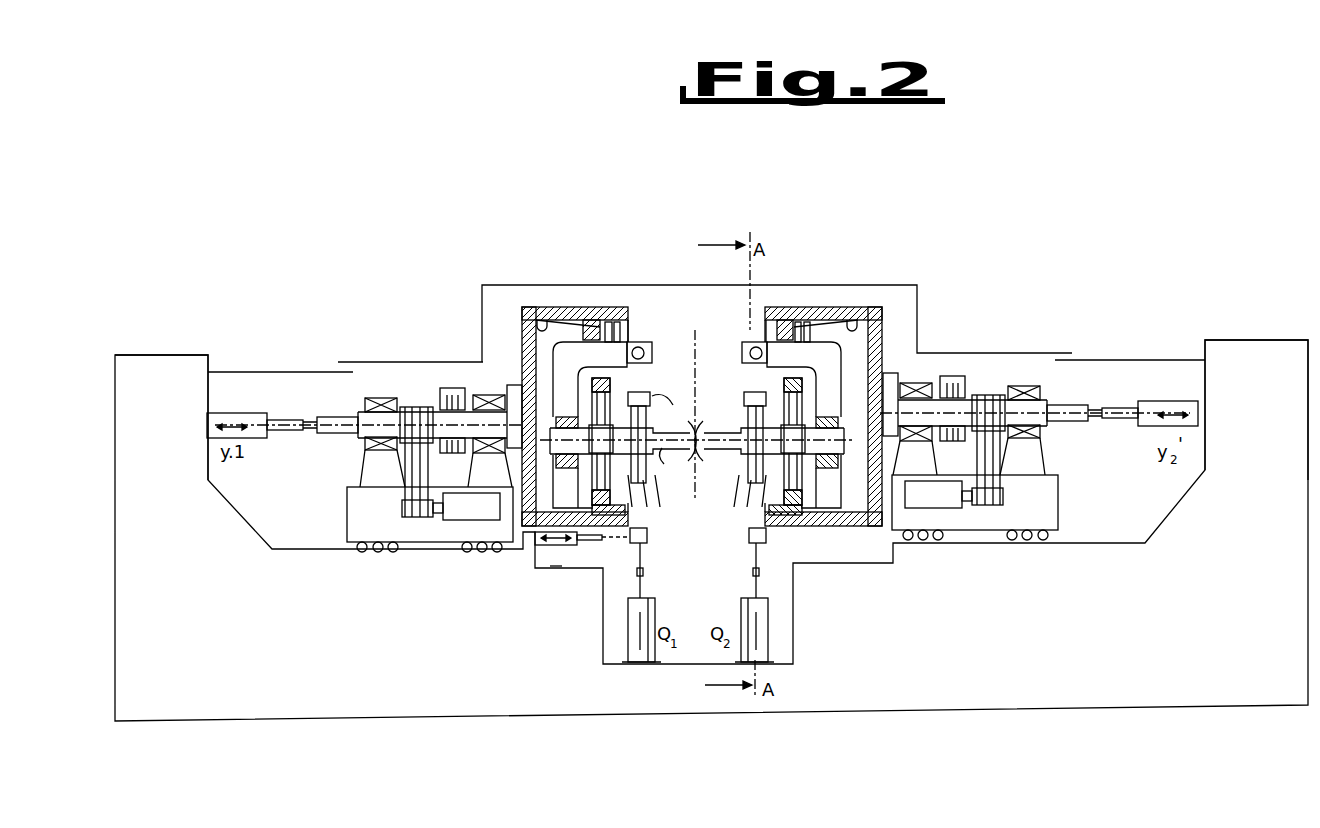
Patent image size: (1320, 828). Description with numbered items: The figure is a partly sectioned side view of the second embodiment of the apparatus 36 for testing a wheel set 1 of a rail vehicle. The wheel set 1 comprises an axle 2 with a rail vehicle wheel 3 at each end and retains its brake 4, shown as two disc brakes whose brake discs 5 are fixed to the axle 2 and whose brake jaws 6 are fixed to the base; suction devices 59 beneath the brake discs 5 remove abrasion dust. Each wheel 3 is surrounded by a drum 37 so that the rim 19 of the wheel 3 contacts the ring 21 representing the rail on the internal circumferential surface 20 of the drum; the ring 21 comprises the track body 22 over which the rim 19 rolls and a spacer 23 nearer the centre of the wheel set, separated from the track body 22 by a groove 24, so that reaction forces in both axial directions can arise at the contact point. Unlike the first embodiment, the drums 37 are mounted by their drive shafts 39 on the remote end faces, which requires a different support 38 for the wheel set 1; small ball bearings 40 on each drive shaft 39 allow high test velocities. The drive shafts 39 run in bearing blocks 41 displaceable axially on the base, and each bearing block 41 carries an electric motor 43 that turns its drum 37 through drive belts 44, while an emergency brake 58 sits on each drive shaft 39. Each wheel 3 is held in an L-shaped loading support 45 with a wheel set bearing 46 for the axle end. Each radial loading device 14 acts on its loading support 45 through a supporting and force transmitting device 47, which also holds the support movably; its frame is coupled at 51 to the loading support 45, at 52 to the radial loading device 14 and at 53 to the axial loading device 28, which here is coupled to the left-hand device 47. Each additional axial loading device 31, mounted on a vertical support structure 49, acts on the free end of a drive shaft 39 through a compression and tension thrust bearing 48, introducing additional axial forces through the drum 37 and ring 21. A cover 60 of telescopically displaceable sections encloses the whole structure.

The wheel set 1 is at (698, 415).
The axle 2 is at (672, 448).
The rail vehicle wheel 3 is at (590, 476).
The brake 4 is at (652, 463).
The brake disc 5 is at (725, 400).
The brake jaw 6 is at (652, 384).
The radial loading device 14 is at (628, 638).
The rim 19 is at (597, 495).
The internal circumferential surface 20 is at (542, 308).
The ring 21 is at (562, 308).
The track body 22 is at (593, 318).
The spacer 23 is at (626, 342).
The groove 24 is at (615, 318).
The axial loading device 28 is at (535, 565).
The additional axial loading device 31 is at (228, 415).
The apparatus 36 is at (1010, 300).
The drum 37 is at (550, 308).
The support 38 is at (623, 342).
The drive shaft 39 is at (433, 407).
The ball bearing 40 is at (377, 398).
The bearing block 41 is at (410, 553).
The electric motor 43 is at (465, 508).
The drive belt 44 is at (406, 467).
The loading support 45 is at (540, 348).
The wheel set bearing 46 is at (517, 465).
The supporting and force transmitting device 47 is at (653, 365).
The compression and tension thrust bearing 48 is at (308, 417).
The vertical support structure 49 is at (165, 368).
The coupling to loading support 51 is at (640, 348).
The coupling to radial loading device 52 is at (742, 540).
The coupling to axial loading device 53 is at (640, 540).
The emergency brake 58 is at (450, 388).
The suction device 59 is at (747, 500).
The cover 60 is at (243, 372).